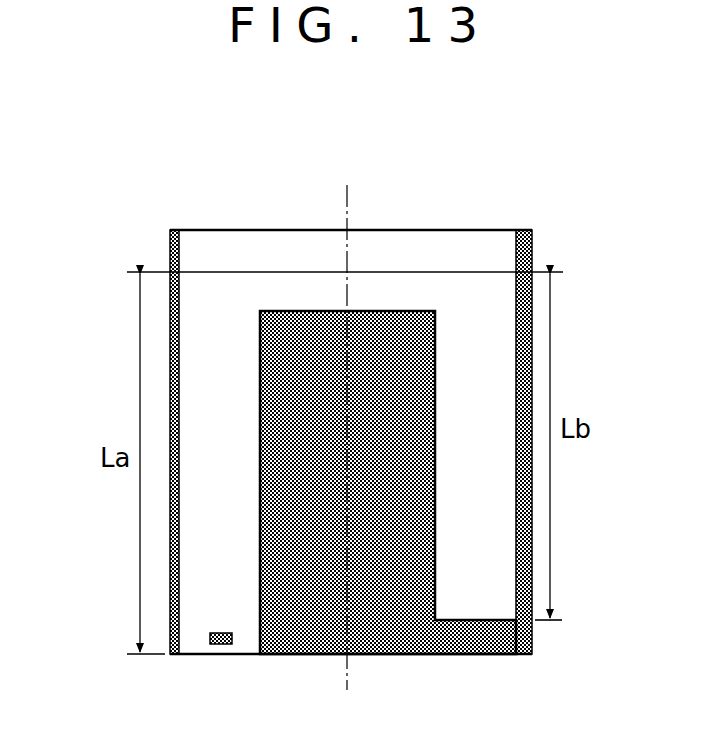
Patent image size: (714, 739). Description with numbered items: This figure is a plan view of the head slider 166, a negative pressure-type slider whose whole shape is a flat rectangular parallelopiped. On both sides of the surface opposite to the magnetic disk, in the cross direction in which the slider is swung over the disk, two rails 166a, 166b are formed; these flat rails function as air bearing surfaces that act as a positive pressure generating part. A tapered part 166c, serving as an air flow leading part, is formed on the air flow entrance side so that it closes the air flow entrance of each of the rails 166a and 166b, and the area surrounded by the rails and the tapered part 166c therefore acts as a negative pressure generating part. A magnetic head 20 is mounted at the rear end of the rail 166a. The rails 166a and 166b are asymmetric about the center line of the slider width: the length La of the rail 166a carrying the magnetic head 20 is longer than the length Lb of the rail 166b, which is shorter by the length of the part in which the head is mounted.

The head slider 166 is at (345, 374).
The rail 166a is at (193, 363).
The rail 166b is at (485, 354).
The tapered part 166c is at (439, 249).
The magnetic head 20 is at (217, 646).